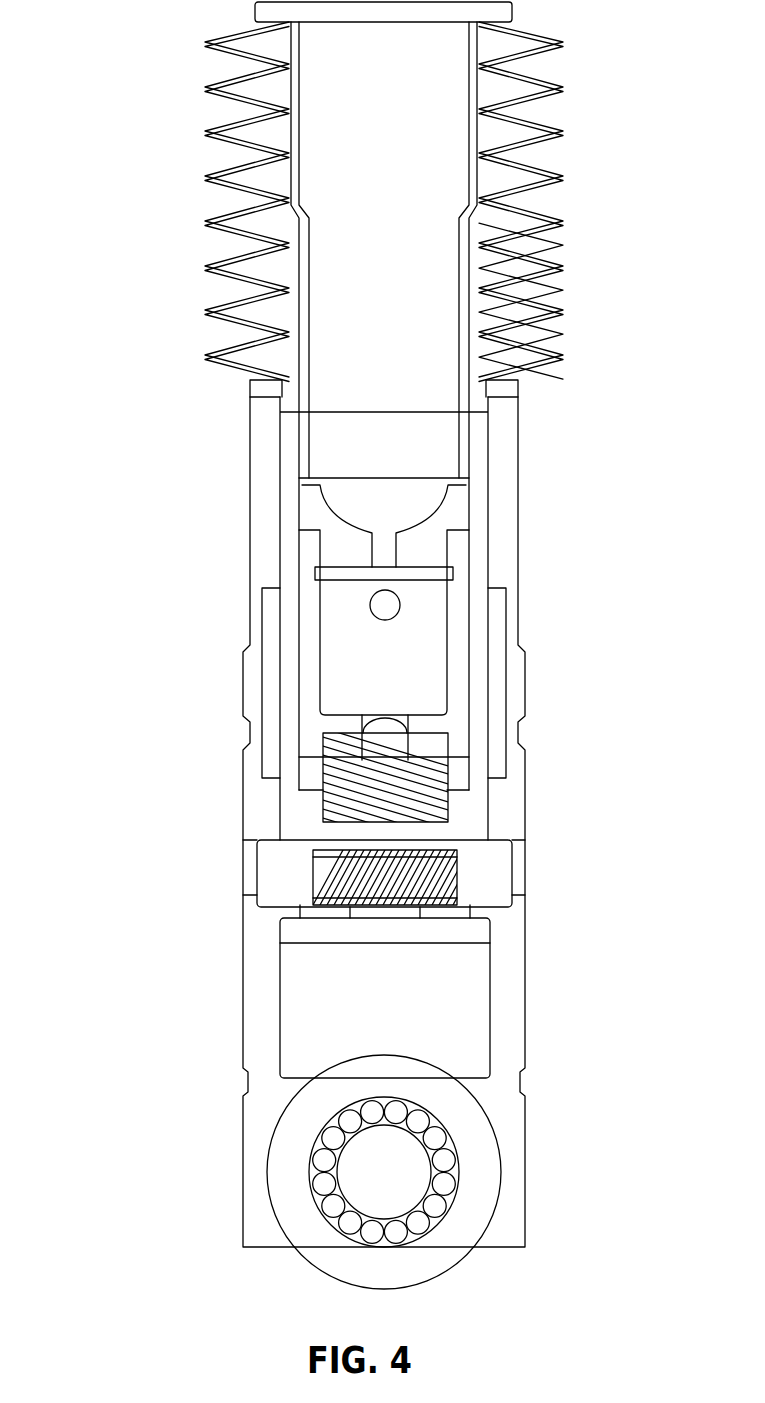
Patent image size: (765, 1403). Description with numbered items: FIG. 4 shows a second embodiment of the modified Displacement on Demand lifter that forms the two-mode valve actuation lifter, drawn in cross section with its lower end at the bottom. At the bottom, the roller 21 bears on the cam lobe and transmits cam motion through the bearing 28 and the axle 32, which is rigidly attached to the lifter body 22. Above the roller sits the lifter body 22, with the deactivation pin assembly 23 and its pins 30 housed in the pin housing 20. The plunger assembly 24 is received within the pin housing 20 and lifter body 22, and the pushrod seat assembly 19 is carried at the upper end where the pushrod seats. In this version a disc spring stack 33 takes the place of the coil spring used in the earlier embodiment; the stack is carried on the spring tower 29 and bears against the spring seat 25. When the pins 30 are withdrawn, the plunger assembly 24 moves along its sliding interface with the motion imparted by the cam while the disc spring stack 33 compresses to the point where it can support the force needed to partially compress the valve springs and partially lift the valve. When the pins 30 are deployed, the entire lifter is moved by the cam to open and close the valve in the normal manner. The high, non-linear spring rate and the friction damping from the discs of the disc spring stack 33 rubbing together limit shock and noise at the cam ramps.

The pushrod seat assembly 19 is at (467, 508).
The pin housing 20 is at (490, 575).
The roller 21 is at (330, 1273).
The lifter body 22 is at (507, 980).
The deactivation pin assembly 23 is at (512, 888).
The plunger assembly 24 is at (290, 630).
The spring seat 25 is at (250, 390).
The bearing 28 is at (440, 1198).
The spring tower 29 is at (550, 148).
The pins 30 is at (488, 877).
The axle 32 is at (387, 1175).
The disc spring stack 33 is at (567, 222).